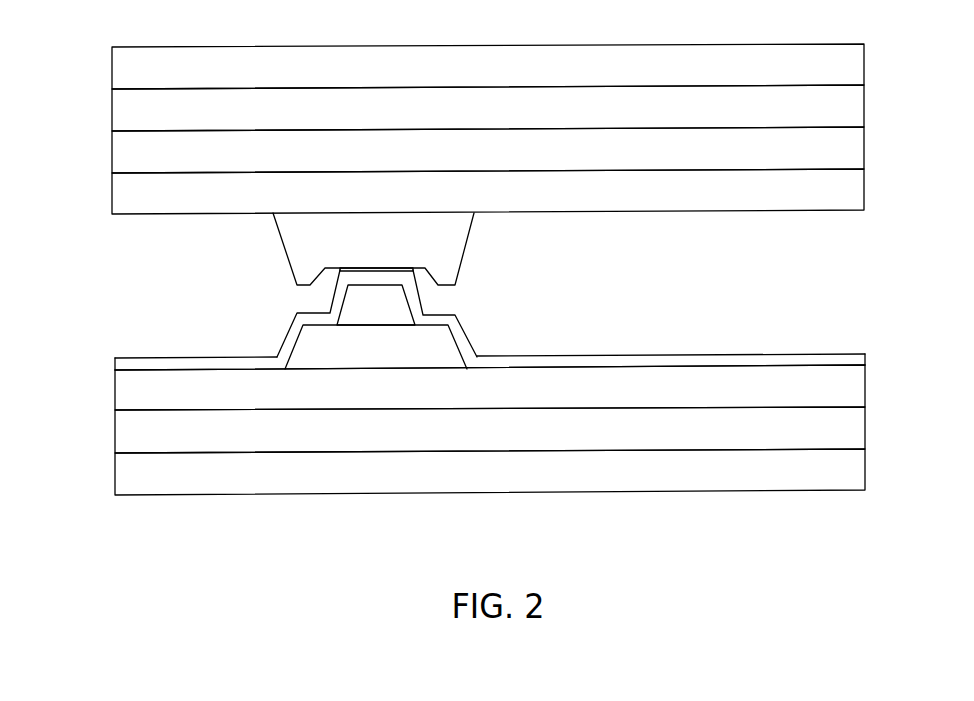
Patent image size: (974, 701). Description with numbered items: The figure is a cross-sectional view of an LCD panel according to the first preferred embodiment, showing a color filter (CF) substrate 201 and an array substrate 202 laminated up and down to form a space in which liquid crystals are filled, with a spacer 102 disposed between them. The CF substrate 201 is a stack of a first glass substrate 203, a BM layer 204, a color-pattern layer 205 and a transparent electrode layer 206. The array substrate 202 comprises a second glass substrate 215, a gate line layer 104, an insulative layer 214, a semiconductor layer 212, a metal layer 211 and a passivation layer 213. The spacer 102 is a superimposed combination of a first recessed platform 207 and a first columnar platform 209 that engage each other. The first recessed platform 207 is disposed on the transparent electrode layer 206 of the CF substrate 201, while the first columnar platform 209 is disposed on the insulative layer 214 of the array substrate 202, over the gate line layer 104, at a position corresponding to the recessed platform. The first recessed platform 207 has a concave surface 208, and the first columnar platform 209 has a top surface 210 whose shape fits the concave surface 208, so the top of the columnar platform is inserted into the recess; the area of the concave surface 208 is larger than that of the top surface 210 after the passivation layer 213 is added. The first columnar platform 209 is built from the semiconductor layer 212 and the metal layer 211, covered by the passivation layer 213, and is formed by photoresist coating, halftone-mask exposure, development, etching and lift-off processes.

The color filter substrate 201 is at (102, 47).
The array substrate 202 is at (102, 358).
The first glass substrate 203 is at (864, 62).
The BM layer 204 is at (864, 104).
The color-pattern layer 205 is at (864, 145).
The transparent electrode layer 206 is at (864, 186).
The first recessed platform 207 is at (467, 240).
The concave surface 208 is at (327, 267).
The first columnar platform 209 is at (262, 273).
The top surface 210 is at (352, 272).
The metal layer 211 is at (413, 308).
The semiconductor layer 212 is at (457, 342).
The passivation layer 213 is at (730, 353).
The spacer 102 is at (552, 212).
The gate line layer 104 is at (865, 421).
The insulative layer 214 is at (865, 382).
The second glass substrate 215 is at (865, 462).